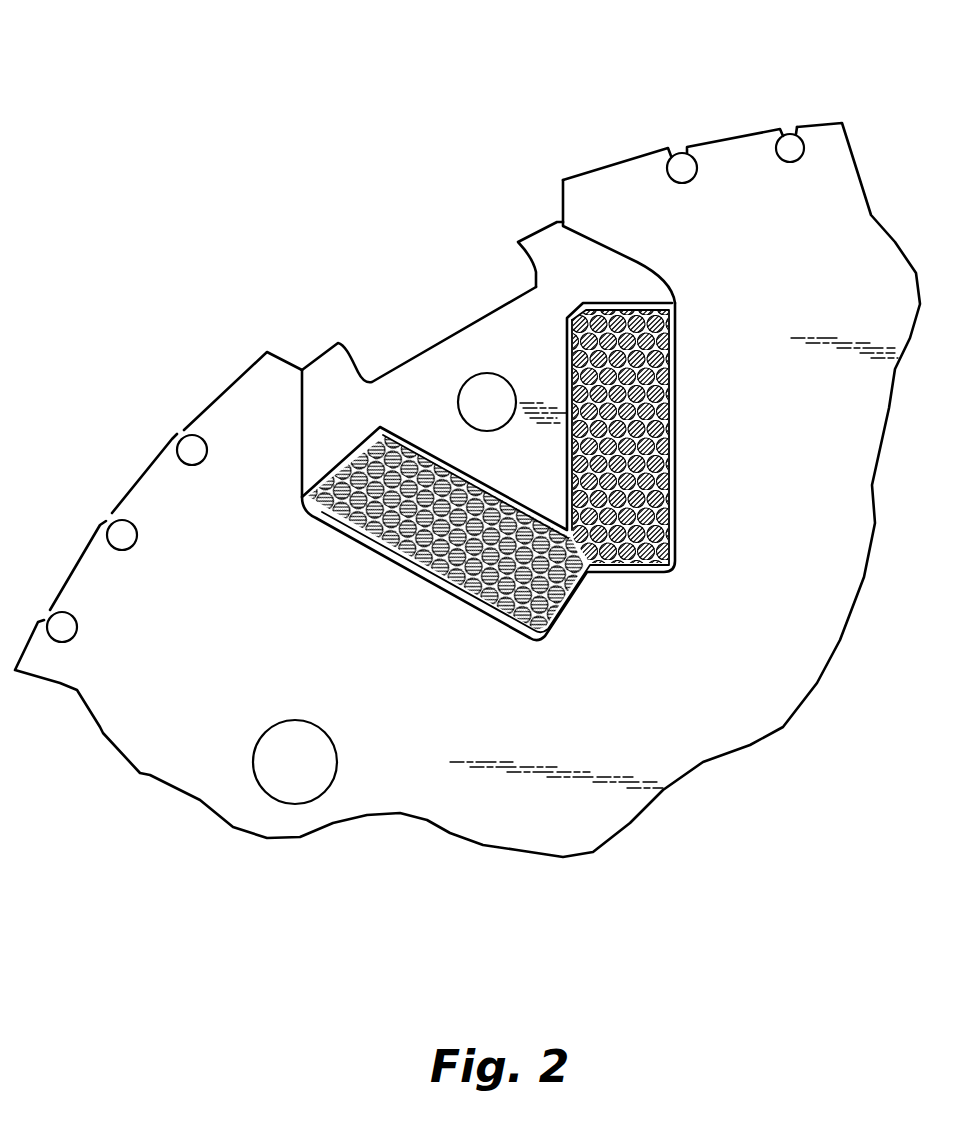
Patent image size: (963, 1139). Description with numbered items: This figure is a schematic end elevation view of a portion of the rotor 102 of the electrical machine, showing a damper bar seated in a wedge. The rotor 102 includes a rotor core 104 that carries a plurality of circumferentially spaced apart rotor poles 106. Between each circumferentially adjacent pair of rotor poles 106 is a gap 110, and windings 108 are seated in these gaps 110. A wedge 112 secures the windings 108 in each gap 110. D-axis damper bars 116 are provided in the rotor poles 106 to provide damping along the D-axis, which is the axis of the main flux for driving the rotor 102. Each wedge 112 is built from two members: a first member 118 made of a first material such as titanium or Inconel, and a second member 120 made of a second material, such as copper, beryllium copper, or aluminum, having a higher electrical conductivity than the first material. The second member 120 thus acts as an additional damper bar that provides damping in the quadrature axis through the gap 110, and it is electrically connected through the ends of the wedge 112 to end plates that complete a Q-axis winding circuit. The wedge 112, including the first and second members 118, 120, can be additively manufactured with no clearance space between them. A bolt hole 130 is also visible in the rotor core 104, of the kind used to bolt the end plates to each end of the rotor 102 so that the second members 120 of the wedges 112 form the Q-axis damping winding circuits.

The rotor 102 is at (197, 155).
The rotor core 104 is at (607, 158).
The rotor pole 106 is at (720, 223).
The winding 108 is at (668, 432).
The gap 110 is at (412, 240).
The wedge 112 is at (588, 272).
The D-axis damper bar 116 is at (792, 120).
The first member 118 is at (523, 360).
The second member 120 is at (482, 403).
The bolt hole 130 is at (285, 763).